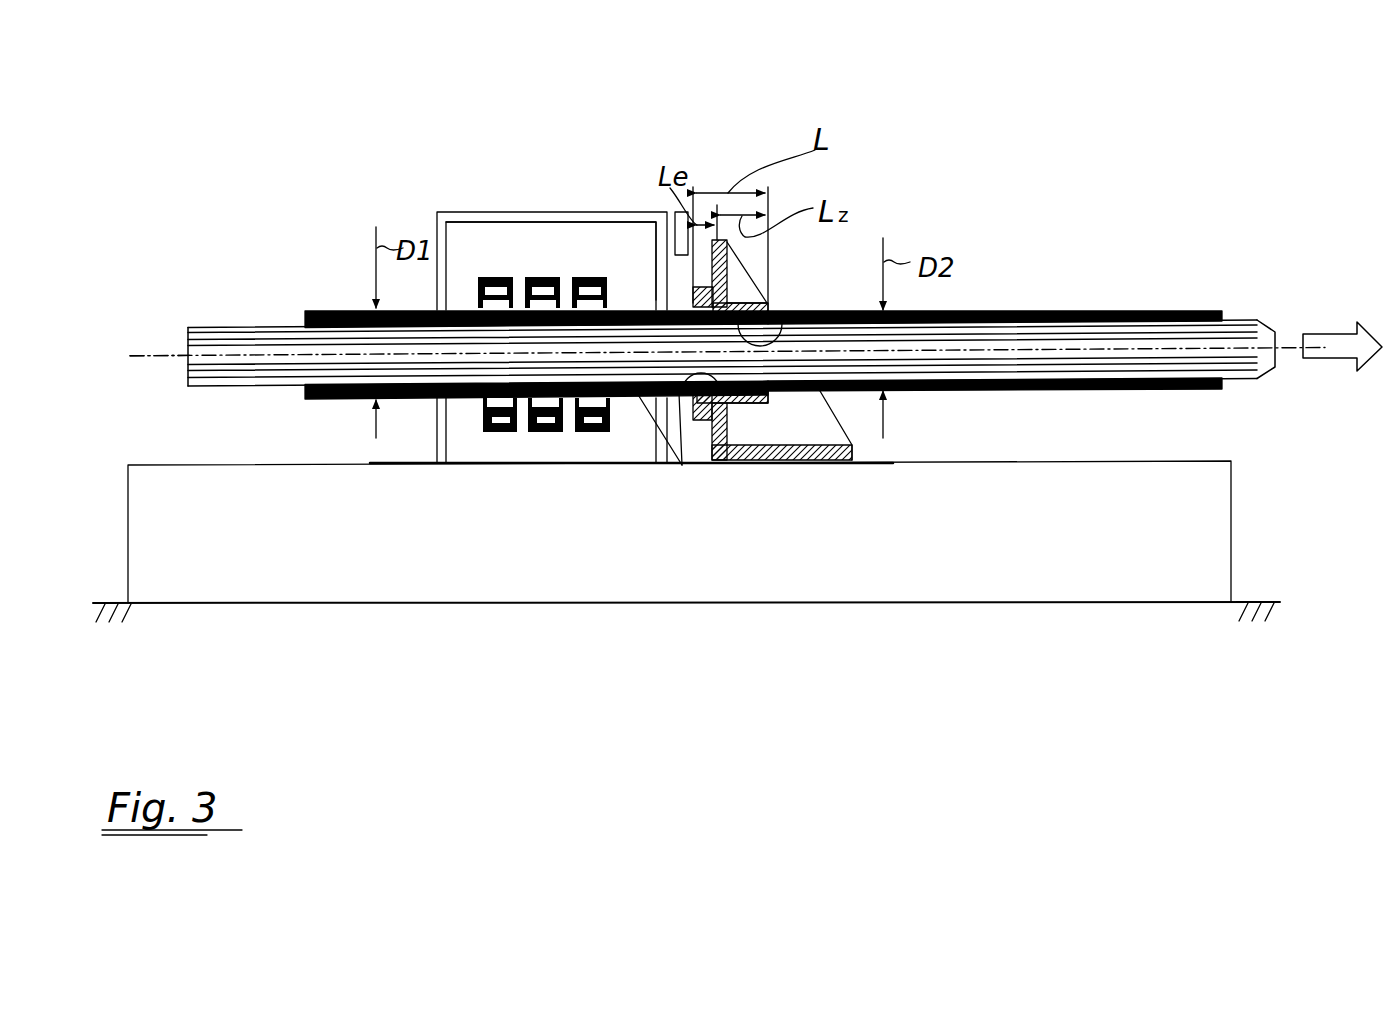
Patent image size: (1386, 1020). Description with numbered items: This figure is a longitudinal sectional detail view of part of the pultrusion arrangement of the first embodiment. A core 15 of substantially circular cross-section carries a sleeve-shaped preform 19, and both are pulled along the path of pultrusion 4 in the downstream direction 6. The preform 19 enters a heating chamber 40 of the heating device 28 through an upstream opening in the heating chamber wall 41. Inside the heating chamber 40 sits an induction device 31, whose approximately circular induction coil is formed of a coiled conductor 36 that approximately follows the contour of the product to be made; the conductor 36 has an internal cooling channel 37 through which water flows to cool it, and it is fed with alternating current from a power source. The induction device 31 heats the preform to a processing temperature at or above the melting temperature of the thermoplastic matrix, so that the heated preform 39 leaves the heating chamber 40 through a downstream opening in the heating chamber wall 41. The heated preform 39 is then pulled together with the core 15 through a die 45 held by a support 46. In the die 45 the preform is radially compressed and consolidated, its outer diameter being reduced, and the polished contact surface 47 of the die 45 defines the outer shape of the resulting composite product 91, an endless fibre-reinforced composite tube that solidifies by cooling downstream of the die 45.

The path of pultrusion 4 is at (163, 356).
The downstream direction 6 is at (1335, 356).
The core 15 is at (1060, 370).
The preform 19 is at (322, 310).
The heating device 28 is at (540, 195).
The induction device 31 is at (556, 258).
The coiled conductor 36 is at (498, 430).
The internal cooling channel 37 is at (550, 418).
The heated preform 39 is at (682, 465).
The heating chamber 40 is at (608, 242).
The heating chamber wall 41 is at (460, 212).
The die 45 is at (748, 403).
The support 46 is at (818, 430).
The polished contact surface 47 is at (784, 320).
The composite product 91 is at (1178, 311).